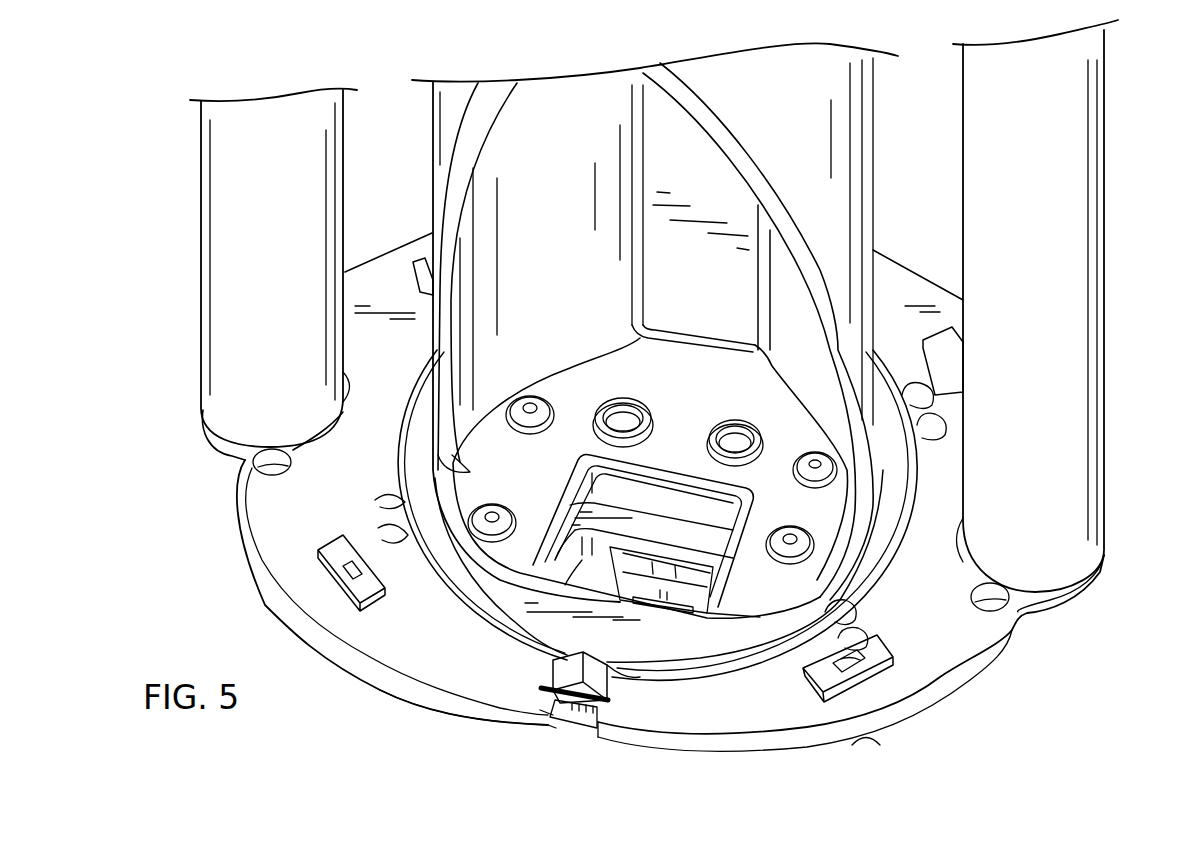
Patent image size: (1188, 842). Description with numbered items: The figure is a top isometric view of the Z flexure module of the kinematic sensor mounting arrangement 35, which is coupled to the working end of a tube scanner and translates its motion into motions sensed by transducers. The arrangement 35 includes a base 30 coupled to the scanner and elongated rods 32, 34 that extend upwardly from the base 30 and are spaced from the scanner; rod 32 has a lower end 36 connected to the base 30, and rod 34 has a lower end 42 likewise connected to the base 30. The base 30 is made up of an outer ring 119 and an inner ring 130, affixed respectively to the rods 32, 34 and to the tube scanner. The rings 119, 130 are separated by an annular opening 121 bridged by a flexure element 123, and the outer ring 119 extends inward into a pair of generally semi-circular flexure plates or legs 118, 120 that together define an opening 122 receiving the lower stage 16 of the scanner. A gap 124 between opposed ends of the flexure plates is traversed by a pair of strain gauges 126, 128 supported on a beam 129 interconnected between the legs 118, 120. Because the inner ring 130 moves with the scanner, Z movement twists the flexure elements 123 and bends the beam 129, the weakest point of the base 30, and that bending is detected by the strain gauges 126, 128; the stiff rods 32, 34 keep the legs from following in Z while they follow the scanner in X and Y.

The lower stage 16 is at (857, 90).
The base 30 is at (228, 562).
The elongated rod 32 is at (1117, 273).
The elongated rod 34 is at (203, 268).
The kinematic sensor mounting arrangement 35 is at (915, 256).
The lower end 36 is at (1068, 582).
The lower end 42 is at (222, 436).
The flexure plate 118 is at (434, 674).
The outer ring 119 is at (380, 632).
The flexure plate 120 is at (778, 722).
The annular opening 121 is at (907, 505).
The opening 122 is at (487, 588).
The flexure element 123 is at (605, 670).
The gap 124 is at (590, 675).
The strain gauge 126 is at (565, 713).
The strain gauge 128 is at (550, 720).
The beam 129 is at (580, 717).
The inner ring 130 is at (888, 570).